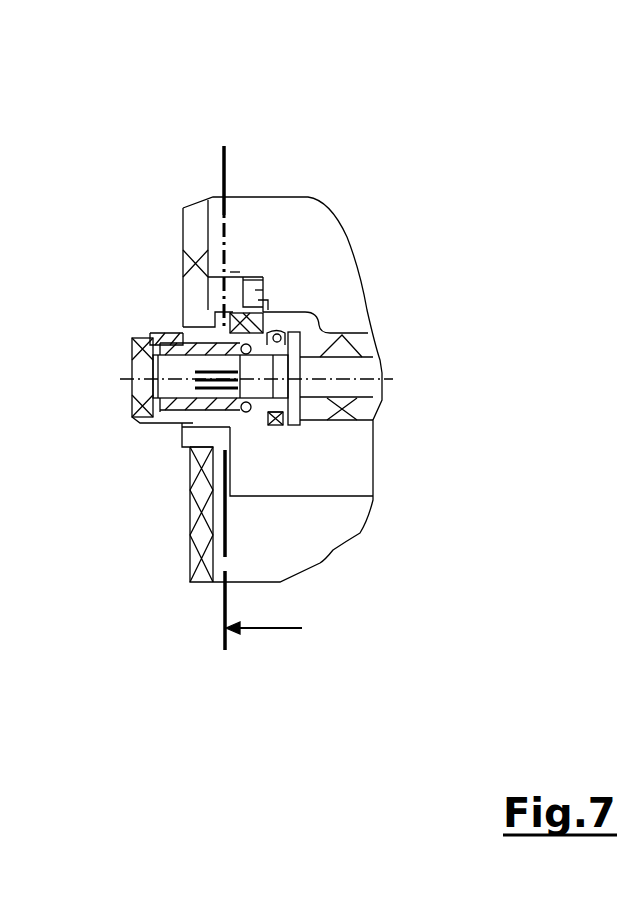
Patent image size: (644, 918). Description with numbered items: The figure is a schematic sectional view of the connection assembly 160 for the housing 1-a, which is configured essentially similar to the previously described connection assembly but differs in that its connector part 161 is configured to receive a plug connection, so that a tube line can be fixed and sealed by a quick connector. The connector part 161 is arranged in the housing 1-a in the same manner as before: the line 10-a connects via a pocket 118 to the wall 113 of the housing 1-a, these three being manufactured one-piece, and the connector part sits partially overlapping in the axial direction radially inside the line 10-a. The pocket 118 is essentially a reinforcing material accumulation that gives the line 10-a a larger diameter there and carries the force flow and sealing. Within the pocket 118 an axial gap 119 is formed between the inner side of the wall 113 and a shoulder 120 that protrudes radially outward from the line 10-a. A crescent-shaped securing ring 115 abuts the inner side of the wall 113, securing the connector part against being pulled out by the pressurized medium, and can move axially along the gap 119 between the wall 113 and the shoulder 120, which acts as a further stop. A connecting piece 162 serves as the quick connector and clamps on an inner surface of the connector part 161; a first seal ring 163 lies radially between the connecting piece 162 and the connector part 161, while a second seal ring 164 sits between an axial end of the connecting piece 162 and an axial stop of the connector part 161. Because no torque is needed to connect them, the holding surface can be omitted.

The housing 1-a is at (187, 240).
The line 10-a is at (347, 347).
The wall 113 is at (203, 205).
The securing ring 115 is at (233, 277).
The pocket 118 is at (243, 273).
The axial gap 119 is at (264, 305).
The shoulder 120 is at (258, 290).
The connection assembly 160 is at (165, 310).
The connector part 161 is at (232, 333).
The connecting piece 162 is at (137, 418).
The first seal ring 163 is at (170, 347).
The second seal ring 164 is at (270, 330).